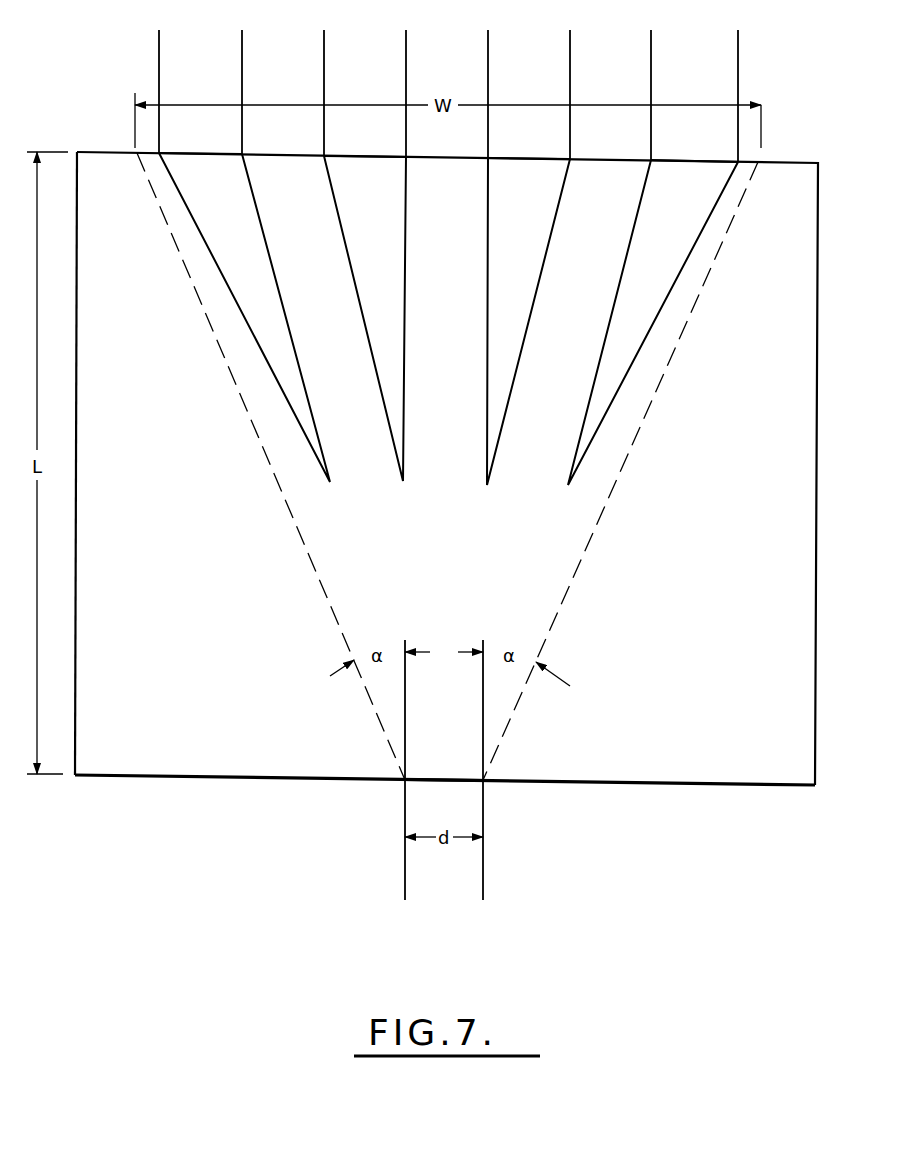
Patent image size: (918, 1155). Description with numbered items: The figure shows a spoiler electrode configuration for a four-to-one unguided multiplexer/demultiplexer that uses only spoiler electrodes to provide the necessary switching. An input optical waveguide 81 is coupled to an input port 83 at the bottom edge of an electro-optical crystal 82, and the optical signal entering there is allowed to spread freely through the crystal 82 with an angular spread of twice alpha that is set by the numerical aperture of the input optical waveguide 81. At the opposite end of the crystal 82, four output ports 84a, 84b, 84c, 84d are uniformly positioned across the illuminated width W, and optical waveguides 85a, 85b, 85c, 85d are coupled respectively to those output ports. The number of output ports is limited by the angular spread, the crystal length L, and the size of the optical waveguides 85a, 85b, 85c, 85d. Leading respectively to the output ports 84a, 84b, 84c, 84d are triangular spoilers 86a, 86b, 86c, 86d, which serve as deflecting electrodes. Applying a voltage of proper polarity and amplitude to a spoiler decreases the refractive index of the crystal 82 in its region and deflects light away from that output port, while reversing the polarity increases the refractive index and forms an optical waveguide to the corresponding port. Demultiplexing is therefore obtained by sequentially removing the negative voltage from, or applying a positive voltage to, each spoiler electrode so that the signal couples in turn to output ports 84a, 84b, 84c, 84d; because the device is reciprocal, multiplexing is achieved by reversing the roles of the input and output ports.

The input optical waveguide 81 is at (430, 868).
The electro-optical crystal 82 is at (698, 768).
The input port 83 is at (467, 781).
The output port 84a is at (222, 153).
The output port 84b is at (383, 156).
The output port 84c is at (545, 159).
The output port 84d is at (710, 162).
The optical waveguide 85a is at (222, 74).
The optical waveguide 85b is at (386, 77).
The optical waveguide 85c is at (550, 79).
The optical waveguide 85d is at (716, 81).
The triangular spoiler 86a is at (296, 395).
The triangular spoiler 86b is at (402, 396).
The triangular spoiler 86c is at (497, 395).
The triangular spoiler 86d is at (602, 395).